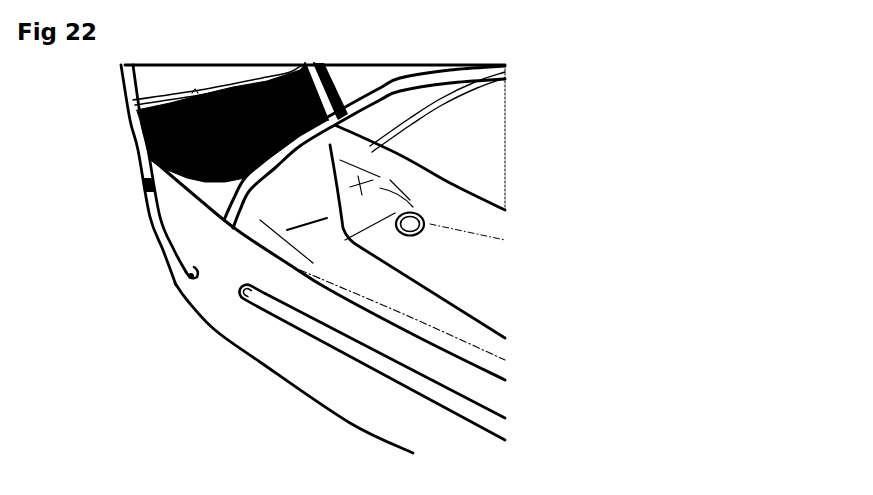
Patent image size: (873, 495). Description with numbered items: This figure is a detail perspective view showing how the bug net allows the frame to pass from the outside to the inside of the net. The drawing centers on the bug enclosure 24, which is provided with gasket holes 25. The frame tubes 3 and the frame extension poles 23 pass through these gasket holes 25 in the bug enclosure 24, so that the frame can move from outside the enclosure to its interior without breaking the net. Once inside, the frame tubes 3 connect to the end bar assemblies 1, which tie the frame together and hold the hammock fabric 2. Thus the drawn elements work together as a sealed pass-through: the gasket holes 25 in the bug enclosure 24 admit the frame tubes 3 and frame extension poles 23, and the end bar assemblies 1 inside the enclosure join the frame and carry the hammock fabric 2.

The end bar assembly 1 is at (318, 202).
The hammock fabric 2 is at (408, 316).
The frame tube 3 is at (313, 330).
The frame extension pole 23 is at (148, 185).
The bug enclosure 24 is at (173, 84).
The gasket hole 25 is at (236, 303).